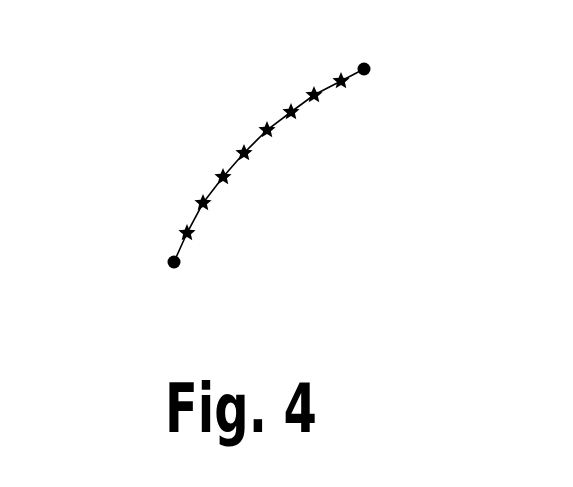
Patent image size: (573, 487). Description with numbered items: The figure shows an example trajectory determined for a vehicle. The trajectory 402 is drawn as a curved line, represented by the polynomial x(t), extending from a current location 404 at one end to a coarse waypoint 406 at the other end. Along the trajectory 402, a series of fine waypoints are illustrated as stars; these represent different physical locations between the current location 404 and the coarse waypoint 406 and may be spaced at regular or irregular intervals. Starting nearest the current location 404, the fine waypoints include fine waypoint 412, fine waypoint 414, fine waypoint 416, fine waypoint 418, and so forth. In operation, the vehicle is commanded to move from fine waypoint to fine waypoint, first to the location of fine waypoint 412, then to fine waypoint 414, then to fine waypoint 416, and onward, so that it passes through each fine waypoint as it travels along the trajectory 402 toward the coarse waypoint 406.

The trajectory 402 is at (178, 247).
The current location 404 is at (178, 270).
The coarse waypoint 406 is at (370, 75).
The fine waypoint 412 is at (182, 232).
The fine waypoint 414 is at (200, 200).
The fine waypoint 416 is at (219, 173).
The fine waypoint 418 is at (263, 127).